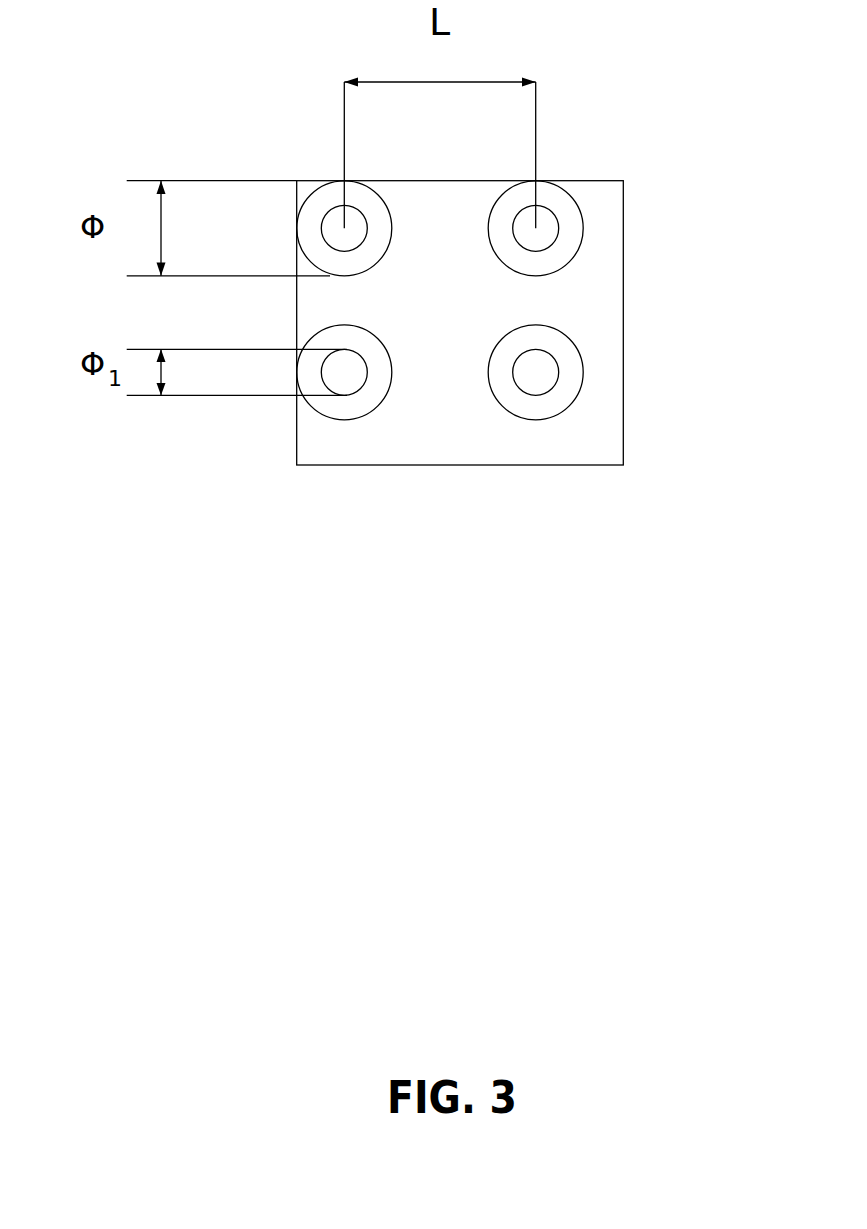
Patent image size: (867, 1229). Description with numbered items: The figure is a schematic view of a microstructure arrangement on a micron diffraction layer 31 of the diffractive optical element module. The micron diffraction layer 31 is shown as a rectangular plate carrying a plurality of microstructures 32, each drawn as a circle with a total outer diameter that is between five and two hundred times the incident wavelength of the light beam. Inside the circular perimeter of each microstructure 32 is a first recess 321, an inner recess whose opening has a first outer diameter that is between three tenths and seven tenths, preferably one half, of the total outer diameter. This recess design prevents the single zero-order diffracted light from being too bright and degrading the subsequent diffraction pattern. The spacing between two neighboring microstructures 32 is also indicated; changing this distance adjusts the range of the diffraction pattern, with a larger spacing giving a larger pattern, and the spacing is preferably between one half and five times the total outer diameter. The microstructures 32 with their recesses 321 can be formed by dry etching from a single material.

The micron diffraction layer 31 is at (623, 235).
The microstructure 32 is at (573, 197).
The first recess 321 is at (557, 377).